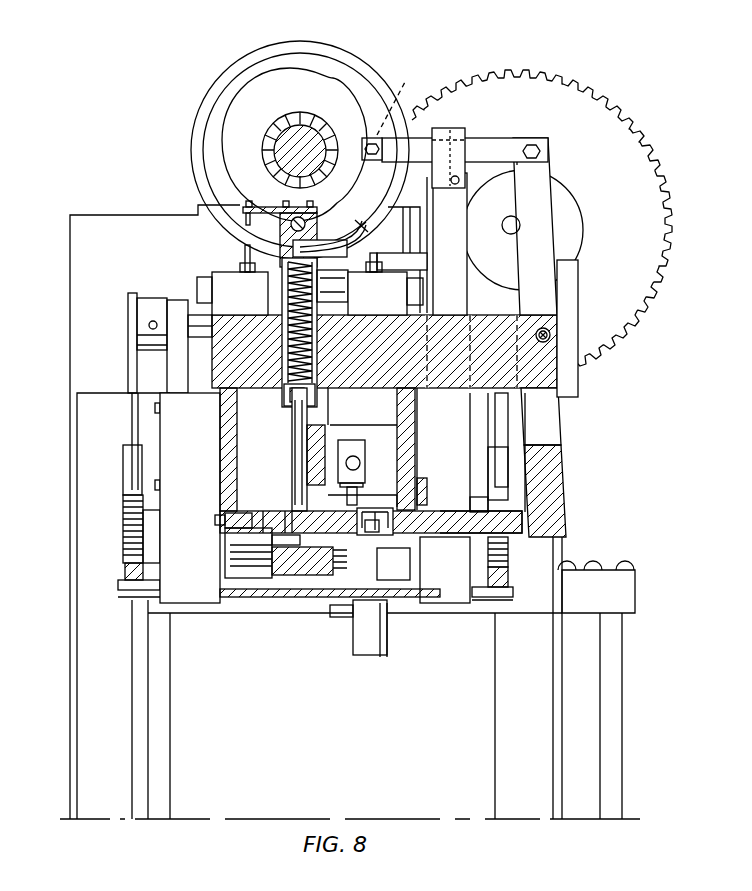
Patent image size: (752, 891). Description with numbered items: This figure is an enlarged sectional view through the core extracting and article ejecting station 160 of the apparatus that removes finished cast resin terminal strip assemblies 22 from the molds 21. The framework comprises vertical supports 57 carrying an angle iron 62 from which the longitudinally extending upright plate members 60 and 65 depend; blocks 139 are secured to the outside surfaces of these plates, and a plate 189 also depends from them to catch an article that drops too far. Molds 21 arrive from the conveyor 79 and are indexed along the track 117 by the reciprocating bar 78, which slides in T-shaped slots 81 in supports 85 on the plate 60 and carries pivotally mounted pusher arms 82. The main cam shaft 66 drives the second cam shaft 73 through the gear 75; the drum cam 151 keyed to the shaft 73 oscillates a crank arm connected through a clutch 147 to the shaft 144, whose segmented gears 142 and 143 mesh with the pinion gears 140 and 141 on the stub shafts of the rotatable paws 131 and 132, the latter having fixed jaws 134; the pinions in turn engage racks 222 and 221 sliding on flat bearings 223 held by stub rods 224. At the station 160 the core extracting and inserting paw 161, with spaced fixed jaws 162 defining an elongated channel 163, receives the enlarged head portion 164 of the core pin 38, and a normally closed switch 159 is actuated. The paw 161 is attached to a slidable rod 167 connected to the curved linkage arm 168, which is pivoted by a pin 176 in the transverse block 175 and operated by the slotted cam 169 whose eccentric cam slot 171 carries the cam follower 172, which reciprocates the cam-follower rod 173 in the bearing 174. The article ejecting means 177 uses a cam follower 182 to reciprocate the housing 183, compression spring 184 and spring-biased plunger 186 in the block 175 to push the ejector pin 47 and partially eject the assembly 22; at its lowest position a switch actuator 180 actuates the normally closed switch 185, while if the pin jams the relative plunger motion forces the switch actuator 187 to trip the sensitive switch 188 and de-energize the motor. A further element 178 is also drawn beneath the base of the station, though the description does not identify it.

The angle iron 62 is at (135, 215).
The vertical supports 57 is at (80, 719).
The gear 75 is at (597, 110).
The drum cam 151 is at (575, 236).
The transverse block 175 is at (552, 378).
The pin 176 is at (550, 335).
The curved linkage arm 168 is at (548, 168).
The second cam shaft 73 is at (510, 235).
The cam-follower rod 173 is at (480, 140).
The bearing 174 is at (455, 135).
The cam follower 172 is at (394, 116).
The station 160 is at (207, 69).
The cam slot 171 is at (262, 62).
The slotted cam 169 is at (365, 74).
The main cam shaft 66 is at (294, 122).
The switch actuator 180 is at (270, 205).
The switch actuator 187 is at (347, 213).
The article ejecting means 177 is at (320, 332).
The housing 183 is at (318, 354).
The cam follower 182 is at (300, 291).
The compression spring 184 is at (300, 301).
The clutch 147 is at (372, 262).
The sensitive switch 188 is at (405, 290).
The switch 185 is at (233, 272).
The shaft 144 is at (200, 312).
The segmented gear 143 is at (130, 410).
The pinion gear 141 is at (130, 522).
The rack 221 is at (125, 572).
The flat bearings 223 is at (125, 586).
The stub rods 224 is at (130, 598).
The blocks 139 is at (185, 603).
The plate member 65 is at (232, 405).
The plate member 60 is at (372, 432).
The T-shaped slots 81 is at (312, 434).
The supports 85 is at (372, 434).
The plunger 186 is at (296, 432).
The pusher arms 82 is at (295, 480).
The reciprocating bar 78 is at (318, 446).
The switch 159 is at (366, 448).
The core extracting and inserting paw 161 is at (358, 487).
The elongated channel 163 is at (421, 485).
The segmented gear 142 is at (495, 462).
The mold 21 is at (270, 508).
The slidable rod 167 is at (432, 520).
The track 117 is at (238, 512).
The fixed jaws 162 is at (382, 510).
The enlarged head portion 164 is at (382, 522).
The ejector pin 47 is at (290, 540).
The paw 132 is at (262, 600).
The fixed jaws 134 is at (232, 565).
The core pin 38 is at (393, 565).
The terminal strip assembly 22 is at (330, 607).
The plate 189 is at (315, 600).
The motor 178 is at (362, 658).
The paw 131 is at (397, 630).
The pinion gear 140 is at (508, 558).
The rack 222 is at (508, 575).
The conveyor 79 is at (612, 560).